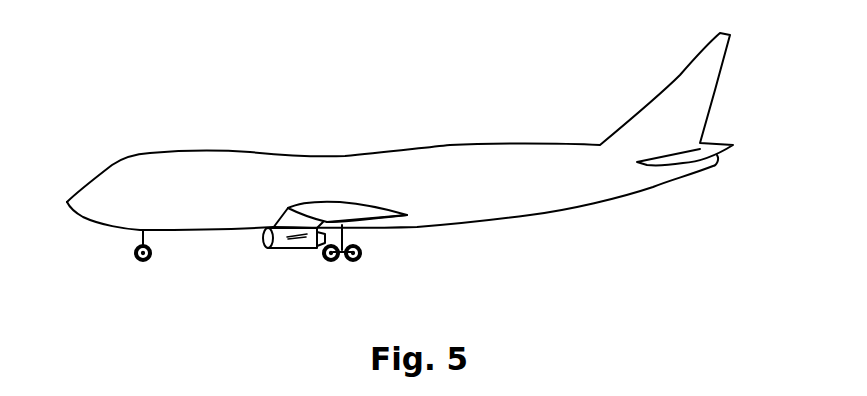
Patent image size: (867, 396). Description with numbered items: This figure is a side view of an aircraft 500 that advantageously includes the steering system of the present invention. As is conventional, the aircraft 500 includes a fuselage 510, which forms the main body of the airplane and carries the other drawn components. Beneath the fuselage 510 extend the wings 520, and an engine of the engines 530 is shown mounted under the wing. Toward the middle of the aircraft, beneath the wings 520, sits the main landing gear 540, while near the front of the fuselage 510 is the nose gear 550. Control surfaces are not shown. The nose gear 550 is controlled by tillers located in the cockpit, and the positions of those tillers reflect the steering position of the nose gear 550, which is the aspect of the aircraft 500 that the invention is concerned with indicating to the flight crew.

The aircraft 500 is at (727, 235).
The fuselage 510 is at (153, 154).
The wings 520 is at (412, 218).
The engines 530 is at (291, 249).
The main landing gear 540 is at (360, 258).
The nose gear 550 is at (143, 265).